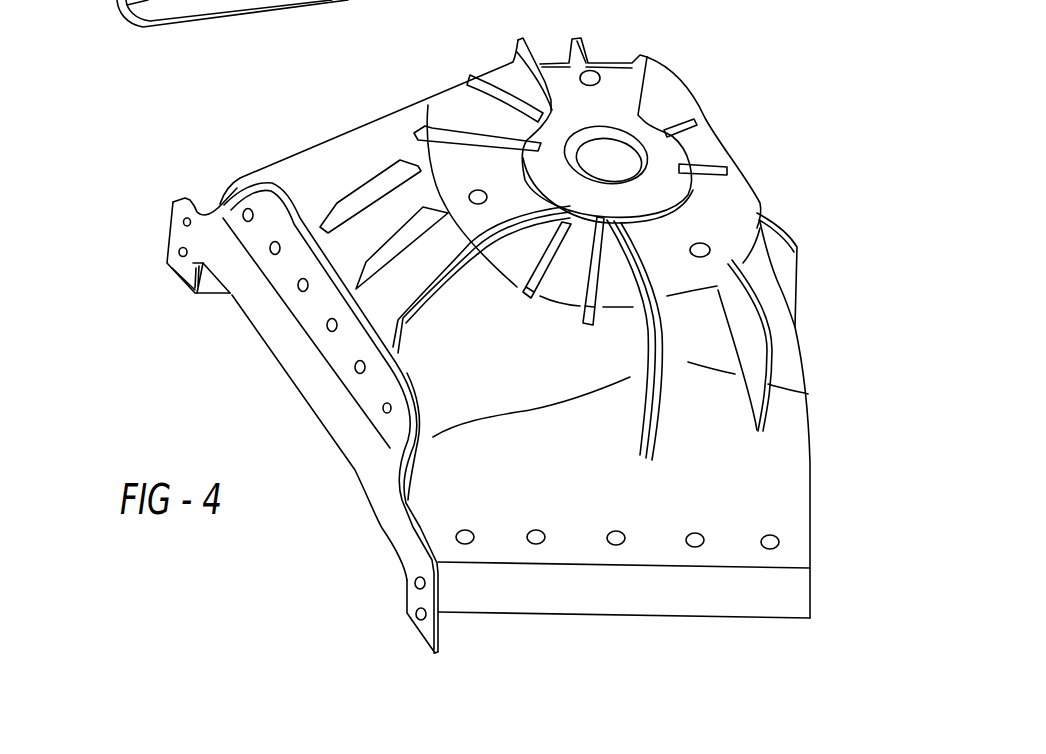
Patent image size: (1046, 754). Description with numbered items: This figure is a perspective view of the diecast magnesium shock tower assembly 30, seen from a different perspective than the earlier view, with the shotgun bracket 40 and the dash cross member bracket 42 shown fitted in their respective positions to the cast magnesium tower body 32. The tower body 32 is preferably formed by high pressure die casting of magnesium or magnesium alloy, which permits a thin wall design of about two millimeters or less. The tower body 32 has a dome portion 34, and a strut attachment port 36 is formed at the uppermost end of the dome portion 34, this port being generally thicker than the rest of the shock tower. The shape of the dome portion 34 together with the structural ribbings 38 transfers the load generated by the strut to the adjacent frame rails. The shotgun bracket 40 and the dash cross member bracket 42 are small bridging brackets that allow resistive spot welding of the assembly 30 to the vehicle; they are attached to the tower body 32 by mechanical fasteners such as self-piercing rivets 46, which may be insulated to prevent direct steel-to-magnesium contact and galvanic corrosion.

The shock tower assembly 30 is at (163, 338).
The cast magnesium tower body 32 is at (722, 205).
The dome portion 34 is at (660, 102).
The strut attachment port 36 is at (600, 134).
The structural ribbings 38 is at (387, 187).
The shotgun bracket 40 is at (283, 322).
The dash cross member bracket 42 is at (600, 593).
The self-piercing rivets 46 is at (186, 222).